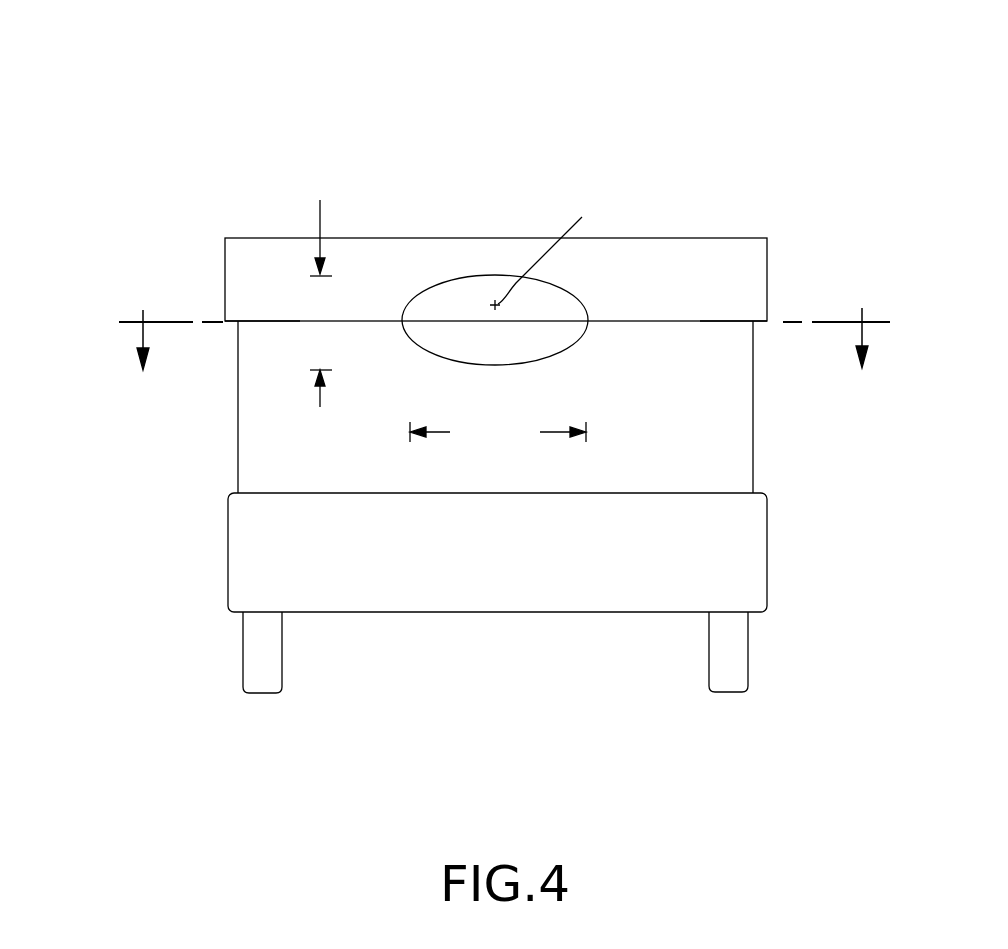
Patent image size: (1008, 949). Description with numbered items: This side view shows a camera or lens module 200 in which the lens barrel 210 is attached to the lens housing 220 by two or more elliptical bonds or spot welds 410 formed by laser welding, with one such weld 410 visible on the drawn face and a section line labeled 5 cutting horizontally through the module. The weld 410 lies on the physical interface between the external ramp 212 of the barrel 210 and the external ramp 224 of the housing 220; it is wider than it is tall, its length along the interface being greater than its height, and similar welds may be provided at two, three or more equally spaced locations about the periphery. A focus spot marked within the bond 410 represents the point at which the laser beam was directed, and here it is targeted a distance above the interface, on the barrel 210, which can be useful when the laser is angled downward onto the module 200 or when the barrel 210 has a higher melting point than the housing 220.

The camera or lens module 200 is at (130, 100).
The lens barrel 210 is at (770, 238).
The ramp of the barrel 212 is at (230, 320).
The ramp of the housing 224 is at (732, 321).
The elliptical bond or spot weld 410 is at (587, 303).
The lens housing 220 is at (765, 505).
The section line 5- 5 is at (501, 339).